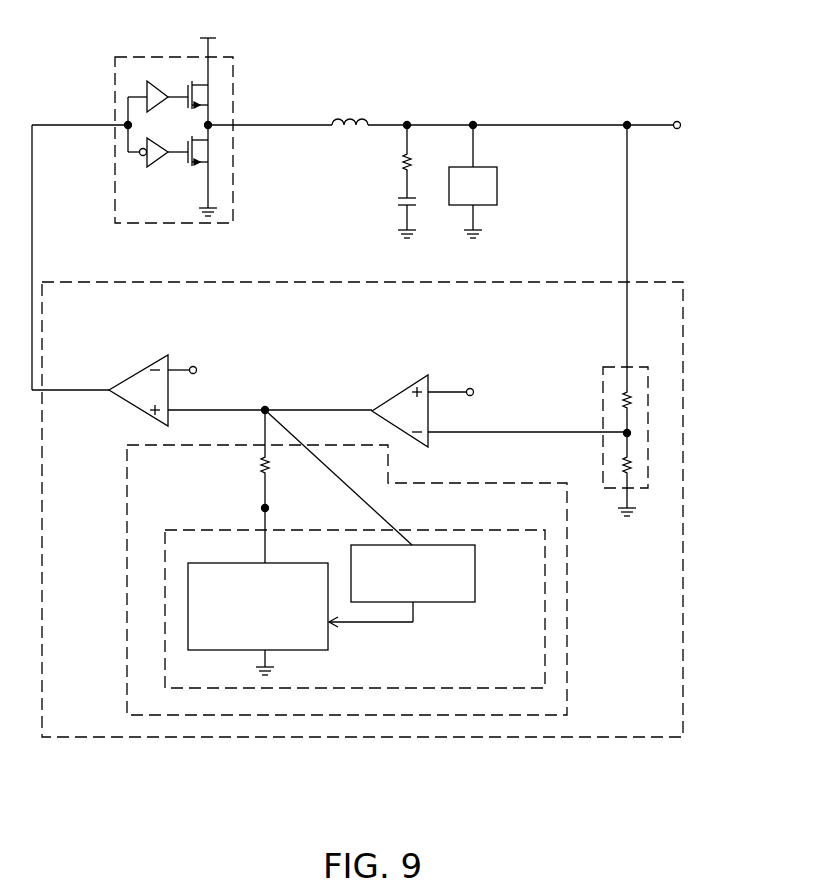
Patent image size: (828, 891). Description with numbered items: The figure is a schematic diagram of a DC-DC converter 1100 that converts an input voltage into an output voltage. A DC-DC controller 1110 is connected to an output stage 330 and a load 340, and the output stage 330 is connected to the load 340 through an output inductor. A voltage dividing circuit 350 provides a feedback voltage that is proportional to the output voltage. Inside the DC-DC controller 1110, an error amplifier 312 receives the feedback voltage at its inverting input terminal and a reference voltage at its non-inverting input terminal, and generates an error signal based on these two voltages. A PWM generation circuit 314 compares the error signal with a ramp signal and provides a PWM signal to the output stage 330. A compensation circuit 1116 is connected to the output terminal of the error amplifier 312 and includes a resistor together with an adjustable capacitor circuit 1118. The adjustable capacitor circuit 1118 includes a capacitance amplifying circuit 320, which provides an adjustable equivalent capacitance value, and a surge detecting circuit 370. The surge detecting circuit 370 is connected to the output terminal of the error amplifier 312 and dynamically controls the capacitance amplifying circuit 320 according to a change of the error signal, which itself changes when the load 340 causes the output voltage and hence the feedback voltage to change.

The output stage 330 is at (236, 78).
The load 340 is at (498, 186).
The DC-DC controller 1110 is at (668, 282).
The voltage dividing circuit 350 is at (642, 366).
The pulse width modulation generation circuit 314 is at (139, 370).
The error amplifier 312 is at (407, 385).
The compensation circuit 1116 is at (515, 483).
The adjustable capacitor circuit 1118 is at (472, 530).
The capacitance amplifying circuit 320 is at (277, 563).
The surge detecting circuit 370 is at (437, 602).
The DC-DC converter 1100 is at (657, 792).